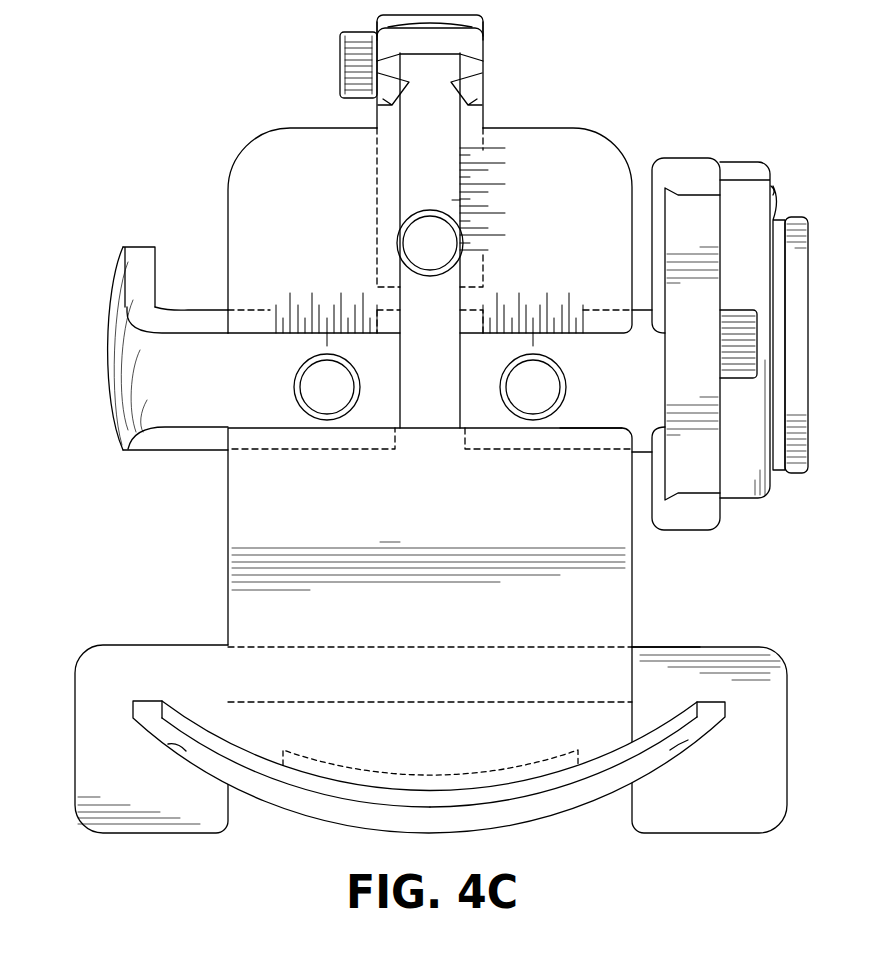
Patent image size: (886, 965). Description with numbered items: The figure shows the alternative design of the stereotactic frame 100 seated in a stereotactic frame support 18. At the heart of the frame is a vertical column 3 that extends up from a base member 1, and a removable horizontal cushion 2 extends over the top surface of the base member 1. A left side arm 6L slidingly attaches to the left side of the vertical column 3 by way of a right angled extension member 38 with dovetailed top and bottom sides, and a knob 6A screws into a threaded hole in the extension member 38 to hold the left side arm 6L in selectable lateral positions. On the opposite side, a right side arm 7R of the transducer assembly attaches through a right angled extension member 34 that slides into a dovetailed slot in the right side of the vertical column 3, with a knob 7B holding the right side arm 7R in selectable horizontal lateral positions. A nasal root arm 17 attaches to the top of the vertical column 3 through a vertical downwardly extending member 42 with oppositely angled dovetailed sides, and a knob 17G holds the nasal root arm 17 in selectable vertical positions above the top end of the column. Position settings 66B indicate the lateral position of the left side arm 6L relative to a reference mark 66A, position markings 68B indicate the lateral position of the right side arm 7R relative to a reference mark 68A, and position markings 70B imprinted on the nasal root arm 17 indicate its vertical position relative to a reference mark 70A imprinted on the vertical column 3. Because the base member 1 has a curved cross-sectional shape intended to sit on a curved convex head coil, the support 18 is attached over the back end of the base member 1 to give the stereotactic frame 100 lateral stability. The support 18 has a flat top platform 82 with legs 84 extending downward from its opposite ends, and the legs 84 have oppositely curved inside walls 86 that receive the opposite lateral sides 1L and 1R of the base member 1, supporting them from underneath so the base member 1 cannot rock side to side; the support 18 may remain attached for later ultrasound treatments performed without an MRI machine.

The stereotactic frame 100 is at (244, 105).
The nasal root arm 17 is at (486, 40).
The vertical downwardly extending member 42 is at (486, 113).
The knob 17G is at (431, 278).
The reference mark 70A is at (448, 198).
The position markings 70B is at (503, 205).
The reference mark 66A is at (322, 341).
The position settings 66B is at (327, 304).
The reference mark 68A is at (540, 341).
The position markings 68B is at (584, 304).
The knob 6A is at (294, 388).
The knob 7B is at (566, 388).
The left side arm 6L is at (140, 246).
The right angled extension member 38 is at (196, 309).
The vertical column 3 is at (226, 567).
The right angled extension member 34 is at (602, 430).
The right side arm 7R is at (682, 157).
The stereotactic frame support 18 is at (427, 702).
The flat top platform 82 is at (692, 646).
The legs 84 is at (76, 741).
The curved inside walls 86 is at (170, 748).
The base member 1 is at (430, 777).
The left lateral side of base 1L is at (240, 762).
The right lateral side of base 1R is at (660, 775).
The horizontal cushion 2 is at (429, 772).